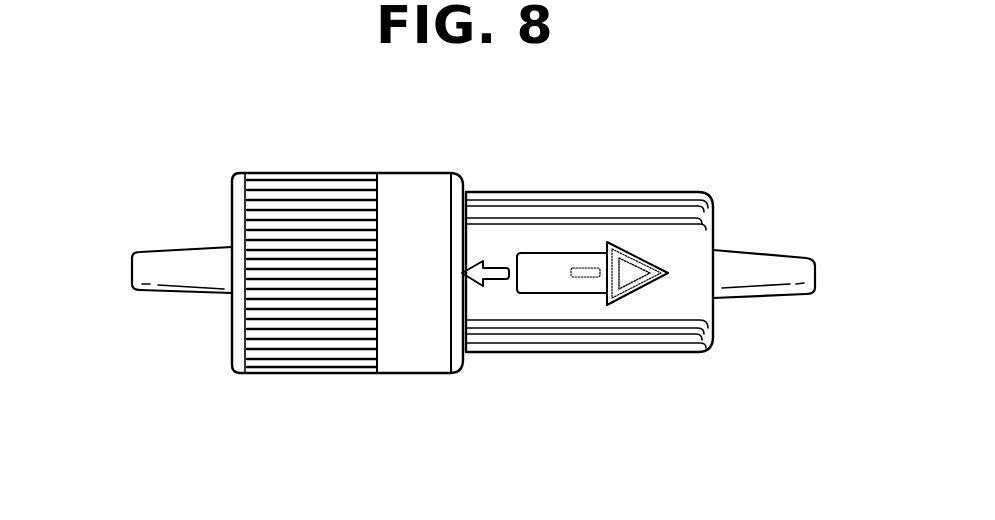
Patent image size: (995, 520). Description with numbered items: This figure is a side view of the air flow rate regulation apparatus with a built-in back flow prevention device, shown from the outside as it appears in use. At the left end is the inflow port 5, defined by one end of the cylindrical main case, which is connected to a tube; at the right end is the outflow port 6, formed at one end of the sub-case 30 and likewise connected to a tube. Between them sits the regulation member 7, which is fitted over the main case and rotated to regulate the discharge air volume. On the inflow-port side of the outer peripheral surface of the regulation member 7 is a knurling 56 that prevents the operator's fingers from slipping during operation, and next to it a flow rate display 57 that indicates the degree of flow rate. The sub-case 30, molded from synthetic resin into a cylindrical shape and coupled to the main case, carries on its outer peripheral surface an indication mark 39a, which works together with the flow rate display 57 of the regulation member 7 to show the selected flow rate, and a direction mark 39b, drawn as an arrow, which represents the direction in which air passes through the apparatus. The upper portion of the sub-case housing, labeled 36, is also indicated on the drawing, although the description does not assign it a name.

The inflow port 5 is at (130, 271).
The outflow port 6 is at (818, 273).
The regulation member 7 is at (351, 263).
The sub-case 30 is at (587, 264).
The upper cover of housing 36 is at (628, 214).
The indication mark 39a is at (477, 283).
The direction mark 39b is at (583, 291).
The knurling 56 is at (296, 346).
The flow rate display 57 is at (418, 358).